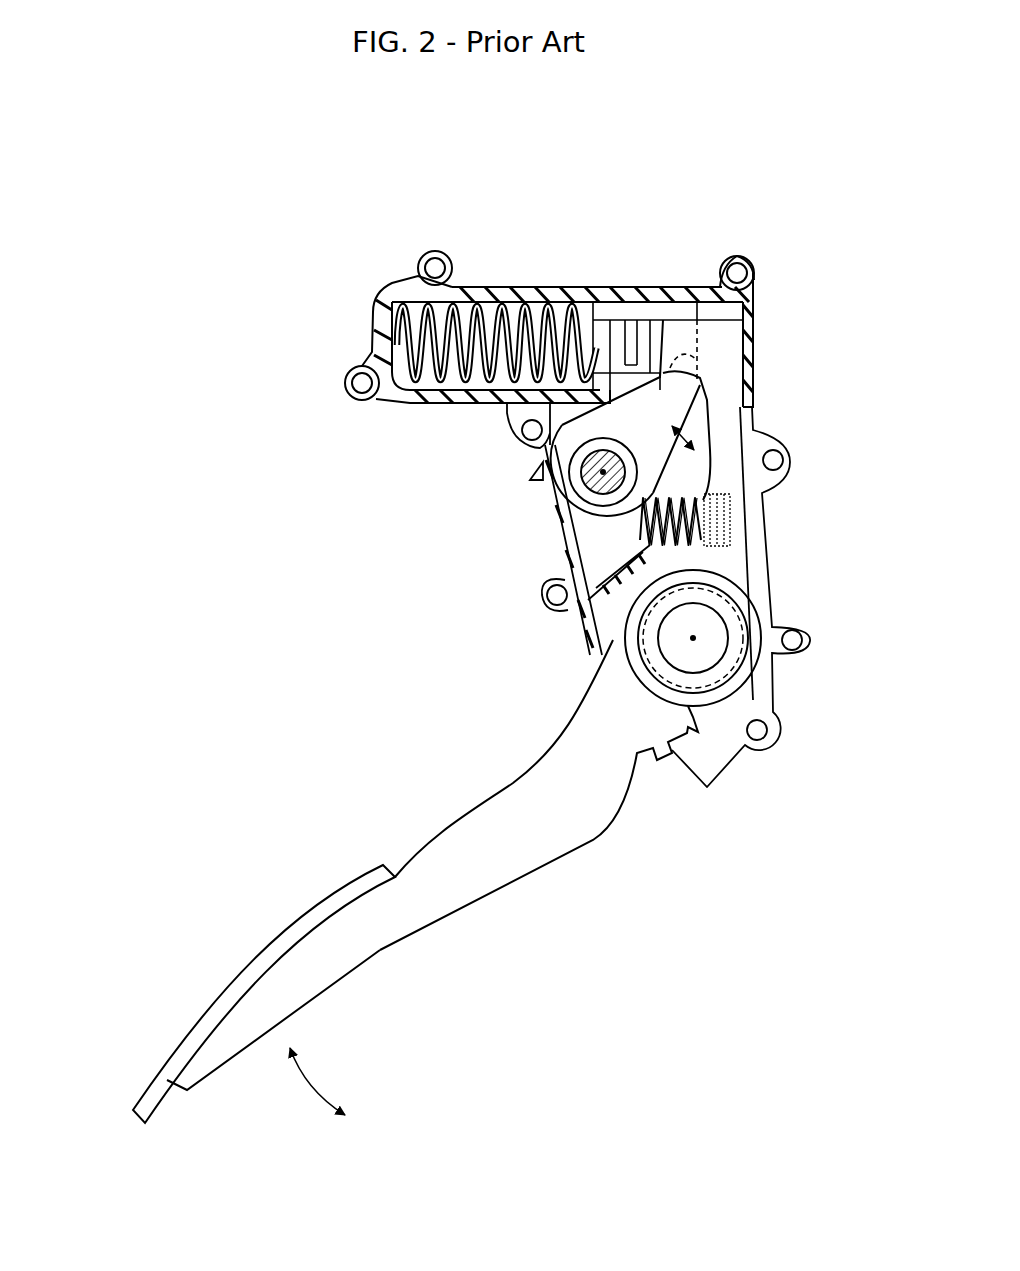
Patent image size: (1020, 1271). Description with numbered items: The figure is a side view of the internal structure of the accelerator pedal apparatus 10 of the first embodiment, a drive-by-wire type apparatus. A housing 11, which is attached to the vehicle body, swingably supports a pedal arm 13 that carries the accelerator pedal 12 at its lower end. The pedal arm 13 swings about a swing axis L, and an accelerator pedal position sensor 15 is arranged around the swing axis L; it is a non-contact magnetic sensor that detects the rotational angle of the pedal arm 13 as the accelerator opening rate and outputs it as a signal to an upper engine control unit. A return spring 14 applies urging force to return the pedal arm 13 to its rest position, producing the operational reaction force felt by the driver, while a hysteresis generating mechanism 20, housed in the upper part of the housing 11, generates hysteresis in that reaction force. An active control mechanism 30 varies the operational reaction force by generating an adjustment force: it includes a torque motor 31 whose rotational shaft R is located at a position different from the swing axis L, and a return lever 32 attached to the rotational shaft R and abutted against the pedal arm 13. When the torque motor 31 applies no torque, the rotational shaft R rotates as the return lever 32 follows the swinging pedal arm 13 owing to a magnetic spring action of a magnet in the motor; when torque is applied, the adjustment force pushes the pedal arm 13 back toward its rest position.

The accelerator pedal apparatus 10 is at (692, 232).
The housing 11 is at (755, 302).
The accelerator pedal 12 is at (173, 1033).
The pedal arm 13 is at (463, 878).
The return spring 14 is at (684, 516).
The accelerator pedal position sensor 15 is at (762, 602).
The hysteresis generating mechanism 20 is at (557, 290).
The active control mechanism 30 is at (527, 480).
The torque motor 31 is at (555, 494).
The return lever 32 is at (667, 407).
The rotational shaft R is at (650, 400).
The swing axis L is at (693, 638).